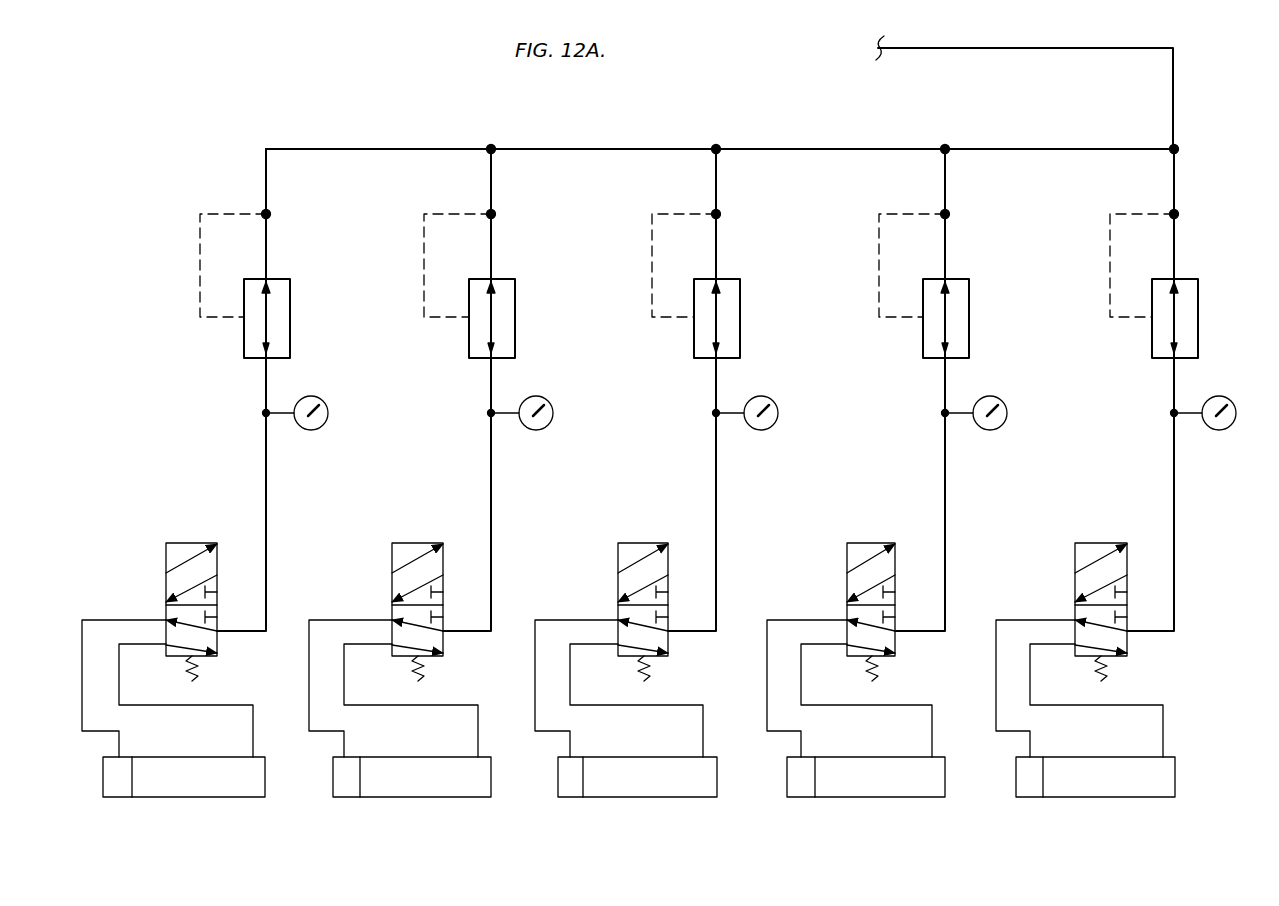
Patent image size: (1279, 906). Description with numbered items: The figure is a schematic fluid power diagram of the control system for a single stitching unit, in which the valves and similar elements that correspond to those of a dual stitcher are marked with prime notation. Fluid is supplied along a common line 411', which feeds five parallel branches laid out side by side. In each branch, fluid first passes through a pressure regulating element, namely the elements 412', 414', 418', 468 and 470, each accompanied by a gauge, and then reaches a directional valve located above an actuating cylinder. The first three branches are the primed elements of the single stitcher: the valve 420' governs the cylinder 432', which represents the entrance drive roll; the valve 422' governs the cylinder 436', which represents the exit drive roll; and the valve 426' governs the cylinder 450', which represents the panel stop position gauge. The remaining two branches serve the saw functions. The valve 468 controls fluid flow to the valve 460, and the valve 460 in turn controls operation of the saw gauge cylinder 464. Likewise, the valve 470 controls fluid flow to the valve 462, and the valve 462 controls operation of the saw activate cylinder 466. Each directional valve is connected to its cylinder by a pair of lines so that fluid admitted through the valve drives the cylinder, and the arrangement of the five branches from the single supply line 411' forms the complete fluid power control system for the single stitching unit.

The supply line 411' is at (1024, 92).
The pressure regulator 412' is at (287, 479).
The pressure regulator 414' is at (515, 480).
The pressure regulator 418' is at (750, 318).
The valve 468 is at (962, 318).
The valve 470 is at (1190, 312).
The solenoid valve 420' is at (152, 604).
The solenoid valve 422' is at (375, 612).
The solenoid valve 426' is at (634, 614).
The valve 460 is at (838, 584).
The valve 462 is at (1070, 580).
The cylinder 432' is at (184, 805).
The cylinder 436' is at (412, 801).
The cylinder 450' is at (637, 800).
The saw gauge cylinder 464 is at (863, 785).
The saw activate cylinder 466 is at (1083, 780).